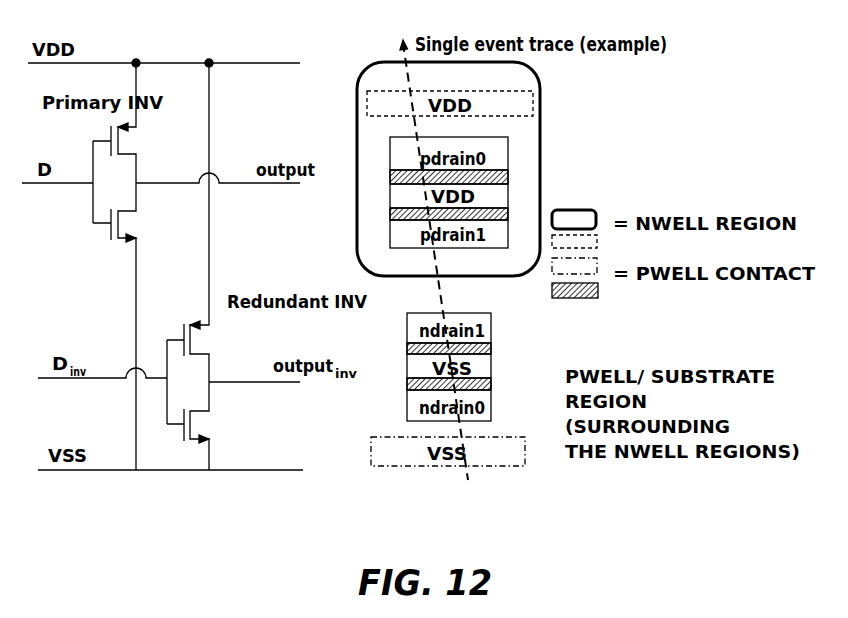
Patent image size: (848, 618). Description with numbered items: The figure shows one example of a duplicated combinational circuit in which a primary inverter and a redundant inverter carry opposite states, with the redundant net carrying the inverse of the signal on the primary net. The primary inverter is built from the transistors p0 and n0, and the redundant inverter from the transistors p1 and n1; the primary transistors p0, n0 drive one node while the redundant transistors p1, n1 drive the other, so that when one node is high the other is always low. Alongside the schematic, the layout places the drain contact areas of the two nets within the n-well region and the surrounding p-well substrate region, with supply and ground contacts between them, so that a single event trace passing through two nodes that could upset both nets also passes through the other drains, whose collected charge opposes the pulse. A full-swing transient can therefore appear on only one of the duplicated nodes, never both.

The PMOS transistor of primary inverter p0 is at (133, 123).
The NMOS transistor of primary inverter n0 is at (135, 326).
The PMOS transistor of redundant inverter p1 is at (216, 222).
The NMOS transistor of redundant inverter n1 is at (218, 426).